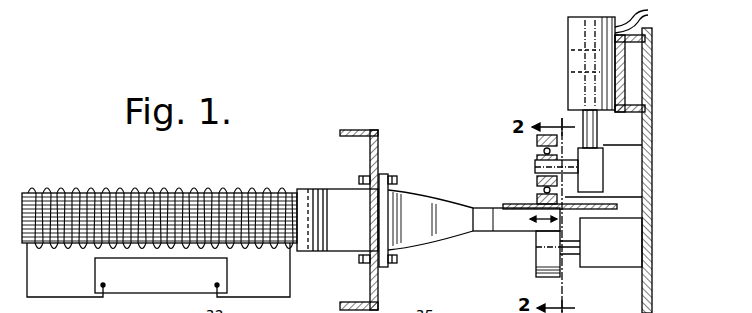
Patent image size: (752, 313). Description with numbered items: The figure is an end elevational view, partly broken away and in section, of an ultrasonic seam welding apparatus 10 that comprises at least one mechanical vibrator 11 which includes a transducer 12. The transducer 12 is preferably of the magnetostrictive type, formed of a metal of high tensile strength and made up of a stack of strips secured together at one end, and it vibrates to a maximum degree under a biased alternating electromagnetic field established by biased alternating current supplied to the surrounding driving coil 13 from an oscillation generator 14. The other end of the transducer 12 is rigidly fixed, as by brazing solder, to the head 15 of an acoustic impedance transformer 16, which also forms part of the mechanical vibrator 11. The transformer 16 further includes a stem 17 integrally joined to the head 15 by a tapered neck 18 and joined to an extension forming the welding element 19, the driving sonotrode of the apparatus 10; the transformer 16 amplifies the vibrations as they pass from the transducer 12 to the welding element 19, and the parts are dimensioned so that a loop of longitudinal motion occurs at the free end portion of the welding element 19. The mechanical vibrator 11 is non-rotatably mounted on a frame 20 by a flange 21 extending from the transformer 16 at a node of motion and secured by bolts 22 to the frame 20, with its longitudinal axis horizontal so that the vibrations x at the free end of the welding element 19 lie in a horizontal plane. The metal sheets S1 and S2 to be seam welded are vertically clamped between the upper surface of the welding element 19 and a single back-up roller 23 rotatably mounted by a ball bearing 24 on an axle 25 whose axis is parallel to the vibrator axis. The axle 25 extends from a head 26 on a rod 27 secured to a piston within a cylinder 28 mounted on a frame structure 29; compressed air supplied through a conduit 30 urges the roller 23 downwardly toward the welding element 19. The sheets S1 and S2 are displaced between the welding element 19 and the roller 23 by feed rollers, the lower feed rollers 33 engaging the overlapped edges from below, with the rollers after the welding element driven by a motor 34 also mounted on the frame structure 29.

The ultrasonic seam welding apparatus 10 is at (293, 136).
The mechanical vibrator 11 is at (343, 254).
The transducer 12 is at (274, 188).
The driving coil 13 is at (196, 188).
The oscillation generator 14 is at (228, 272).
The head 15 is at (340, 188).
The acoustic impedance transformer 16 is at (405, 210).
The stem 17 is at (462, 213).
The tapered neck 18 is at (400, 245).
The welding element 19 is at (483, 232).
The frame 20 is at (380, 152).
The flange 21 is at (388, 178).
The bolts 22 is at (392, 263).
The roller 23 is at (537, 138).
The ball bearing 24 is at (537, 160).
The axle 25 is at (540, 178).
The head 26 is at (603, 168).
The rod 27 is at (597, 127).
The cylinder 28 is at (575, 31).
The frame structure 29 is at (648, 281).
The conduit 30 is at (646, 16).
The lower feed rollers 33 is at (538, 263).
The motor 34 is at (628, 267).
The metal sheet S1 is at (506, 206).
The metal sheet S2 is at (614, 202).
The vibrations x is at (540, 222).